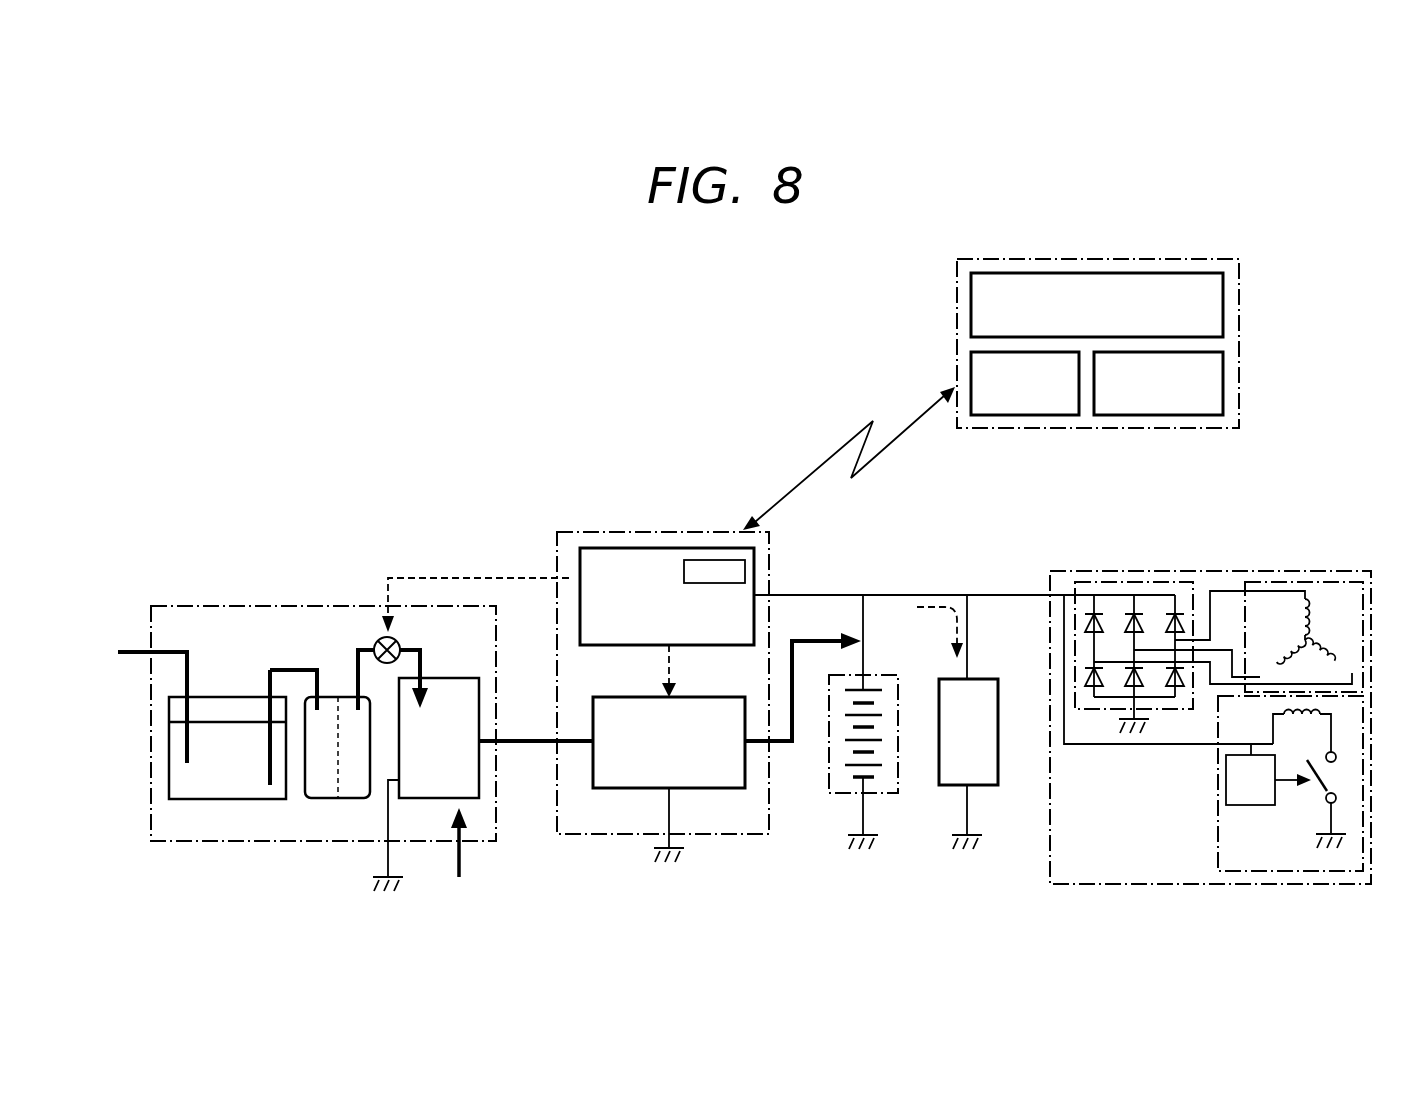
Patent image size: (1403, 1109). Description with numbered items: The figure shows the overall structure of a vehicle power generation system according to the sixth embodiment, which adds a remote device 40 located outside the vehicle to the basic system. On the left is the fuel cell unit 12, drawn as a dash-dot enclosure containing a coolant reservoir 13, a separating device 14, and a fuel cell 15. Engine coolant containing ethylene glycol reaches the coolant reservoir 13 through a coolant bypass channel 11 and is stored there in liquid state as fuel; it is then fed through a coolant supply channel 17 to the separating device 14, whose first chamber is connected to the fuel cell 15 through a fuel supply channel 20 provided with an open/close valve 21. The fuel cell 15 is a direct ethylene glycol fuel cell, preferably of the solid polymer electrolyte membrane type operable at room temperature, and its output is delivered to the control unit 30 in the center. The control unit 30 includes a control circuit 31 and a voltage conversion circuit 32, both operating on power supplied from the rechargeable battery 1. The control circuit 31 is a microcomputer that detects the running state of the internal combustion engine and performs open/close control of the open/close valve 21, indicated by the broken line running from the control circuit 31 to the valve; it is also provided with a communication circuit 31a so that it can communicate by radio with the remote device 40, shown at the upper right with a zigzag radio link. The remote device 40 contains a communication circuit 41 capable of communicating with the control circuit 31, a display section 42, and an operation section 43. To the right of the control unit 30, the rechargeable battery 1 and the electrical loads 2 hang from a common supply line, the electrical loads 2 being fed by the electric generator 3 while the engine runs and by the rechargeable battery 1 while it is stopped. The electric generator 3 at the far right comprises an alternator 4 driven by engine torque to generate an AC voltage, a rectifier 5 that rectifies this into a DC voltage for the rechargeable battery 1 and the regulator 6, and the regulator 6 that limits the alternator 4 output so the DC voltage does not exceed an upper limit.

The rechargeable battery 1 is at (887, 675).
The electrical loads 2 is at (985, 679).
The electric generator 3 is at (1094, 560).
The alternator 4 is at (1297, 582).
The rectifier 5 is at (1150, 582).
The regulator 6 is at (1254, 871).
The coolant bypass channel 11 is at (133, 647).
The fuel cell unit 12 is at (213, 600).
The coolant reservoir 13 is at (227, 799).
The separating device 14 is at (322, 799).
The fuel cell 15 is at (479, 783).
The coolant supply channel 17 is at (290, 668).
The fuel supply channel 20 is at (357, 667).
The open/close valve 21 is at (382, 638).
The control unit 30 is at (662, 522).
The control circuit 31 is at (608, 548).
The communication circuit 31a is at (716, 560).
The voltage conversion circuit 32 is at (723, 789).
The remote device 40 is at (1080, 258).
The communication circuit 41 is at (1153, 273).
The display section 42 is at (1025, 415).
The operation section 43 is at (1162, 415).